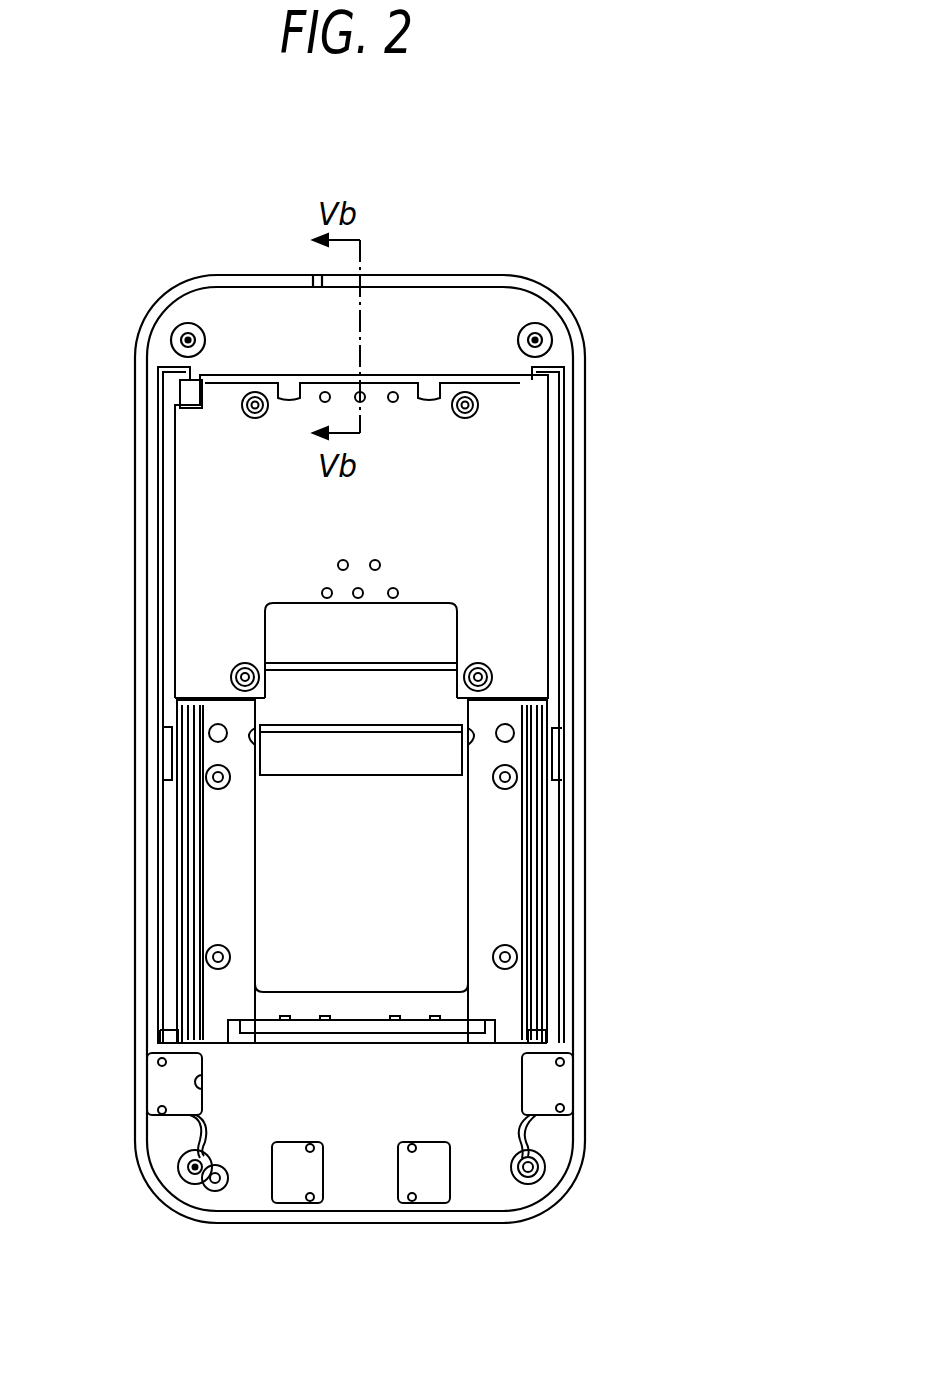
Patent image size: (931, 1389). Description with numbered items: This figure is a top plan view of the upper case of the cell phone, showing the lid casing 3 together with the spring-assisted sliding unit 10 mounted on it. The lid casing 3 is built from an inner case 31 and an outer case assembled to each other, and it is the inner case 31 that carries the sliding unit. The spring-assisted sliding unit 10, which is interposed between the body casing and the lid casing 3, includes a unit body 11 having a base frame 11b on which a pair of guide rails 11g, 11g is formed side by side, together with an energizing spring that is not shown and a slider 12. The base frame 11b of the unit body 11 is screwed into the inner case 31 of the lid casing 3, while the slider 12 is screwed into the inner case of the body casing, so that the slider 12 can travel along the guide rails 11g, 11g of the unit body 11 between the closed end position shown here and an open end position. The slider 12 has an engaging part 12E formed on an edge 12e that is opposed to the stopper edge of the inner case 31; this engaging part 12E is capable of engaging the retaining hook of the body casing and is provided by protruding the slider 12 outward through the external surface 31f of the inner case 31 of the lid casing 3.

The lid casing 3 is at (140, 298).
The inner case 31 is at (353, 1170).
The external surface 31f is at (305, 322).
The spring-assisted sliding unit 10 is at (160, 690).
The slider 12 is at (257, 500).
The edge 12e is at (233, 375).
The engaging part 12E is at (447, 392).
The unit body 11 is at (156, 952).
The base frame 11b is at (485, 863).
The guide rails 11g is at (187, 865).